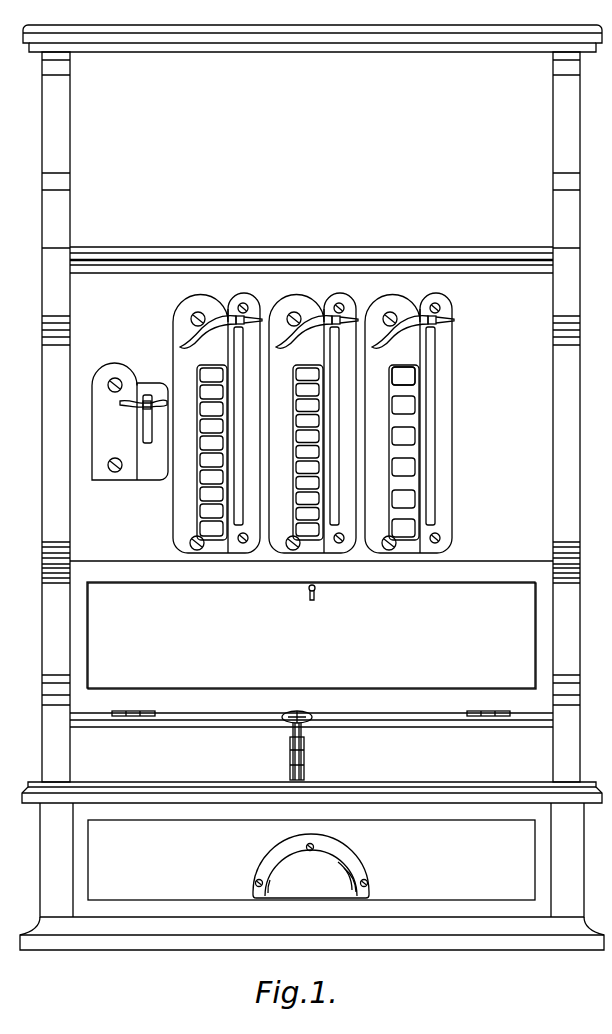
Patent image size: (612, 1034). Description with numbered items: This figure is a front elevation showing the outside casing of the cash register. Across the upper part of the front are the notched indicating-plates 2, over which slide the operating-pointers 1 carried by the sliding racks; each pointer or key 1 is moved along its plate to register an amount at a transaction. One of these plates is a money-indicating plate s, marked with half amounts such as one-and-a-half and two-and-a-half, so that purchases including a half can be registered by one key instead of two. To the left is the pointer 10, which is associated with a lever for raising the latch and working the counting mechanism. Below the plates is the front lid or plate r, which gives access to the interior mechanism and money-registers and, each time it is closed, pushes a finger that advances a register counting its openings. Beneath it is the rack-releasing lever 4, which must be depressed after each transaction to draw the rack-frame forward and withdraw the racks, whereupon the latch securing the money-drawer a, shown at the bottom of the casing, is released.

The operating-pointer 1 is at (226, 318).
The notched indicating-plate 2 is at (312, 423).
The rack-releasing lever 4 is at (297, 735).
The pointer 10 is at (147, 398).
The money-indicating plate s is at (395, 438).
The front lid or plate r is at (311, 635).
The money-drawer a is at (311, 860).